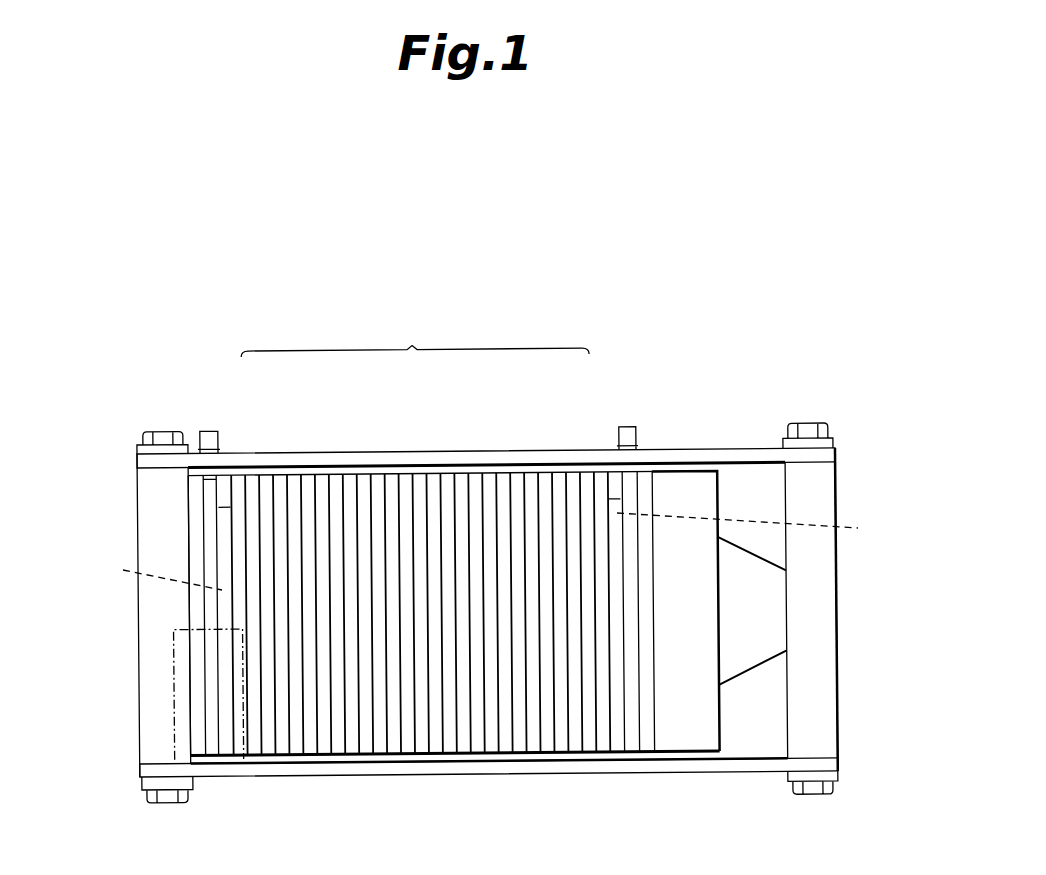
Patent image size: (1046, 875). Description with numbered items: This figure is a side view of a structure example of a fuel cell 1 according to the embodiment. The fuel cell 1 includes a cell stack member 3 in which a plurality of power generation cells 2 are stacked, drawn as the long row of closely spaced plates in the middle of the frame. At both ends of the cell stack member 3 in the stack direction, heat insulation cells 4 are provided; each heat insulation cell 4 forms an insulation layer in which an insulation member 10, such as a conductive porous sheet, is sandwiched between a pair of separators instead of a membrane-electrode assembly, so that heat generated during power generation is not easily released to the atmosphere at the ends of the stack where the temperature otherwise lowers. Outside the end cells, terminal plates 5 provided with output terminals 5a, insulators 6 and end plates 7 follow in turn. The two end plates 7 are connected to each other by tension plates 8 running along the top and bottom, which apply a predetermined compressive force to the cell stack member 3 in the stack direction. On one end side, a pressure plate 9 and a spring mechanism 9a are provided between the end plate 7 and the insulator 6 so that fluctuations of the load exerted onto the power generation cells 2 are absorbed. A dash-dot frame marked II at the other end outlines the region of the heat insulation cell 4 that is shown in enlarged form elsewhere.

The fuel cell 1 is at (623, 272).
The power generation cell 2 is at (238, 478).
The cell stack member 3 is at (453, 535).
The heat insulation cell 4 is at (222, 494).
The terminal plate 5 is at (212, 757).
The output terminal 5a is at (208, 431).
The insulator 6 is at (198, 757).
The end plate 7 is at (826, 712).
The tension plate 8 is at (728, 448).
The pressure plate 9 is at (702, 490).
The spring mechanism 9a is at (775, 603).
The insulation member 10 is at (493, 551).
The section line II is at (178, 668).